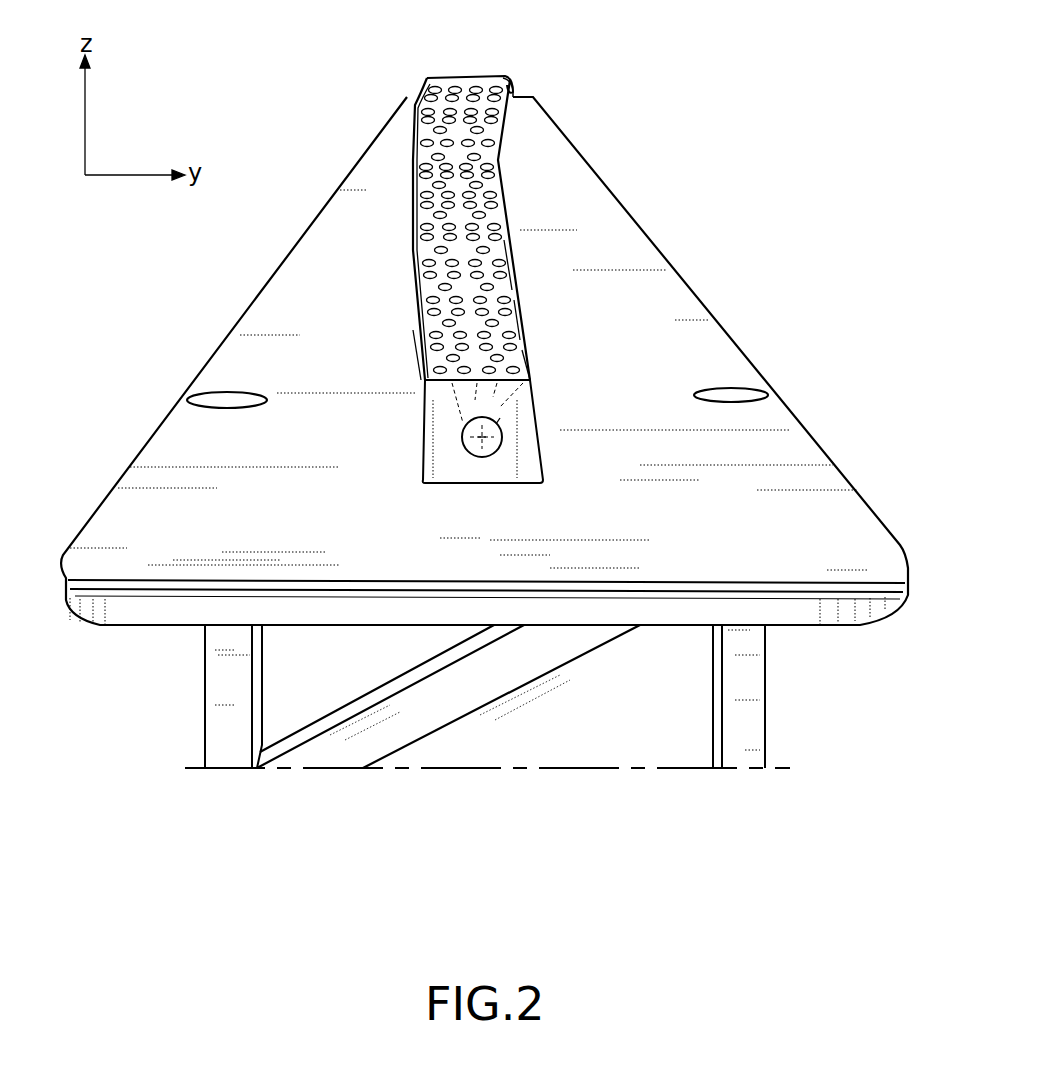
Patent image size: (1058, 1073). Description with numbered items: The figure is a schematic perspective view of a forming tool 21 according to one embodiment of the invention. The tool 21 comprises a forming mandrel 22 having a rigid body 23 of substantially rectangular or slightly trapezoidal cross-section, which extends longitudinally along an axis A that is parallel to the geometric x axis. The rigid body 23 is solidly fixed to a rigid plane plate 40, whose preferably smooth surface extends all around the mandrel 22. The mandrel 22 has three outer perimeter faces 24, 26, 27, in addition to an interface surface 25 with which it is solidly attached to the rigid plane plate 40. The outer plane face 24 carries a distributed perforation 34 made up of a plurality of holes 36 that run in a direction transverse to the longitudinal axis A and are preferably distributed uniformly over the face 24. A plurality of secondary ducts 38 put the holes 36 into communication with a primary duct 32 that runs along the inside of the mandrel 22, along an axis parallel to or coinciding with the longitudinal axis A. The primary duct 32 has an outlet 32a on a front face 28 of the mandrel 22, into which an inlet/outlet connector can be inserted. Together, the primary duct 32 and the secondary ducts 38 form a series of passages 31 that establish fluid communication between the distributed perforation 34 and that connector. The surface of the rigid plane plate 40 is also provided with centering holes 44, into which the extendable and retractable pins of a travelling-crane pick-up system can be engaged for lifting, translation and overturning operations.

The forming tool 21 is at (678, 179).
The forming mandrel 22 is at (507, 193).
The rigid body 23 is at (412, 140).
The outer plane face 24 is at (513, 277).
The interface surface 25 is at (455, 483).
The outer perimeter face 26 is at (420, 352).
The outer perimeter face 27 is at (513, 92).
The front face 28 is at (423, 436).
The passages 31 is at (457, 452).
The primary duct 32 is at (545, 408).
The outlet 32a is at (500, 455).
The distributed perforation 34 is at (420, 183).
The holes 36 is at (523, 325).
The secondary ducts 38 is at (530, 388).
The rigid plane plate 40 is at (850, 622).
The centering holes 44 is at (218, 398).
The longitudinal axis A is at (507, 418).